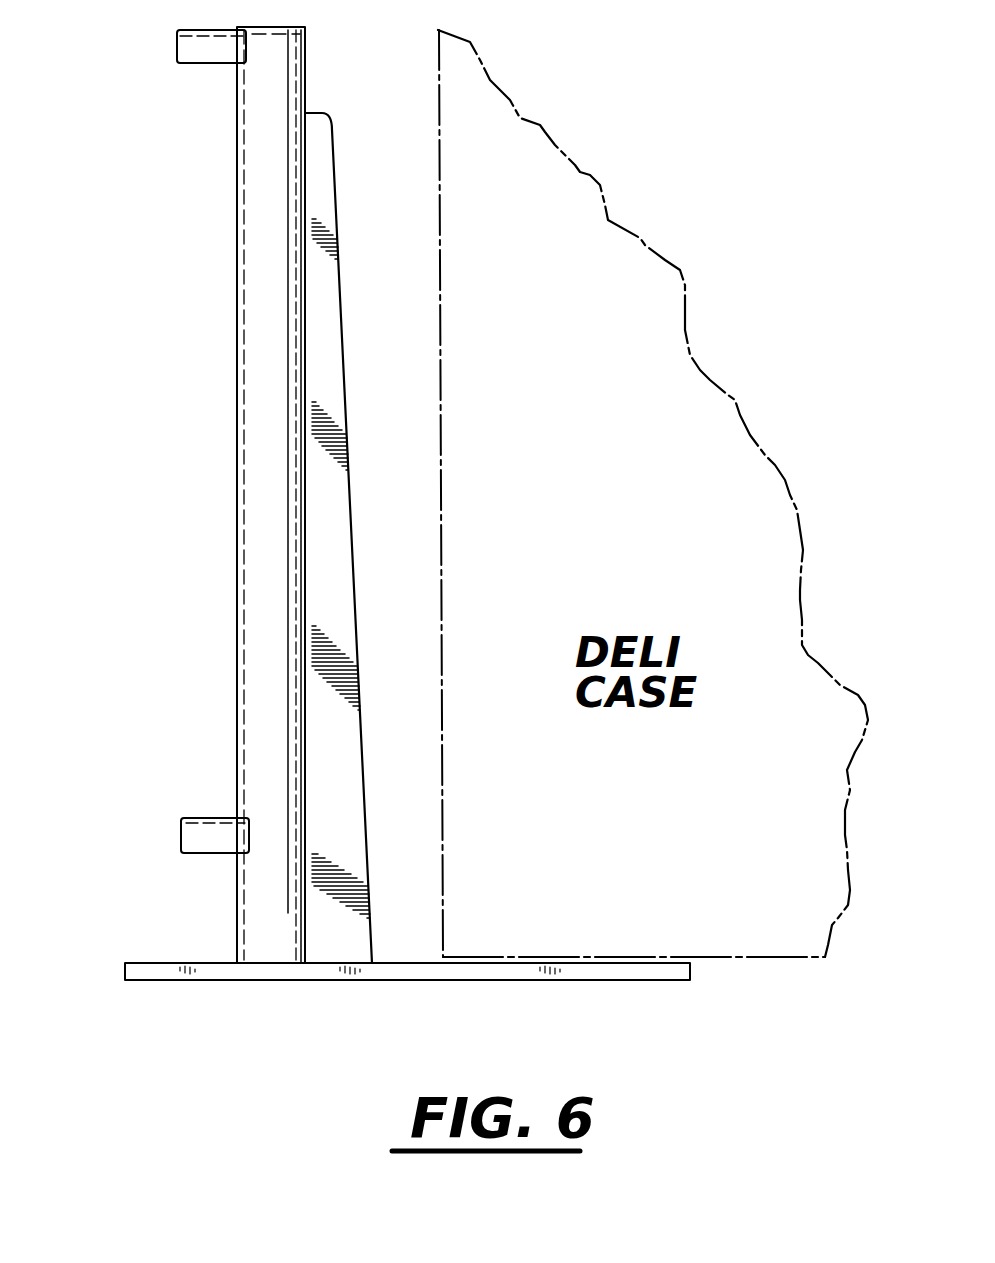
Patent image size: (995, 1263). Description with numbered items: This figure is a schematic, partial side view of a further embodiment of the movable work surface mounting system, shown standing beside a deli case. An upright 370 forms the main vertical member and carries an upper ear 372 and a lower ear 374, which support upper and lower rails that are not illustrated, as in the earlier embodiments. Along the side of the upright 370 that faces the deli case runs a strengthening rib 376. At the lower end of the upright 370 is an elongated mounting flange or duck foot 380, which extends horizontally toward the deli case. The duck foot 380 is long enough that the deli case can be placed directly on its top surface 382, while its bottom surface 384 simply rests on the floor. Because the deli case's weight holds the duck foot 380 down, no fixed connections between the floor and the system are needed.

The upright 370 is at (252, 510).
The upper ear 372 is at (190, 57).
The lower ear 374 is at (188, 830).
The strengthening rib 376 is at (333, 380).
The mounting flange or duck foot 380 is at (322, 975).
The top surface 382 is at (405, 946).
The bottom surface 384 is at (148, 982).